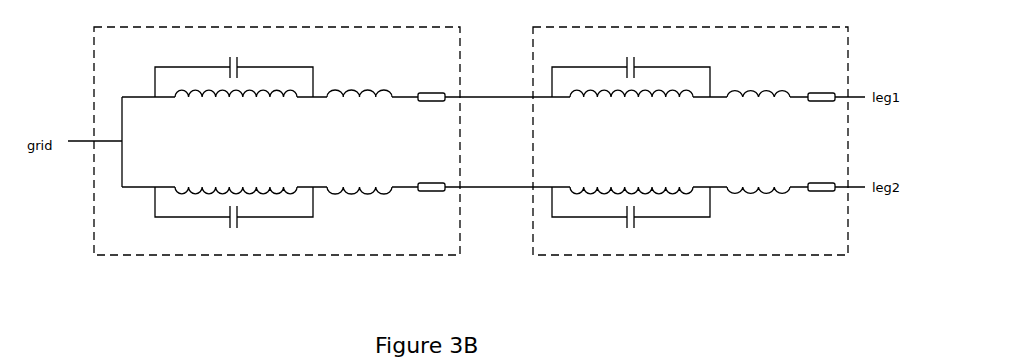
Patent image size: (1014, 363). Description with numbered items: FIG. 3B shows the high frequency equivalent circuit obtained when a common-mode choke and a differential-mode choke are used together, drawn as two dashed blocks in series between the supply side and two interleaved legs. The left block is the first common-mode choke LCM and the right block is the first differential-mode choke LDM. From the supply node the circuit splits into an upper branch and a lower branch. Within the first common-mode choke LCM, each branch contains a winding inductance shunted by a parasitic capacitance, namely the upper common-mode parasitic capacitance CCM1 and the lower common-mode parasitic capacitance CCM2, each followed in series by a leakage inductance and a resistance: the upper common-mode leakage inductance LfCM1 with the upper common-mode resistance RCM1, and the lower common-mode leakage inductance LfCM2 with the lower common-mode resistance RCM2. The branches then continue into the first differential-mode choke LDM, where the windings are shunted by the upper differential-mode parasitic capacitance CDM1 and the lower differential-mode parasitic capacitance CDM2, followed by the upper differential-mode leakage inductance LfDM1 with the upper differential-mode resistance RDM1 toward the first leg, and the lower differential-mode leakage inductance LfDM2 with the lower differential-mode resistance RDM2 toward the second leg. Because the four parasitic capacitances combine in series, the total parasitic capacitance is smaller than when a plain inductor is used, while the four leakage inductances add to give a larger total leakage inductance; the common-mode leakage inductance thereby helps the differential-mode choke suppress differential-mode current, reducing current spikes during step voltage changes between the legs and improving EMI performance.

The first common-mode choke LCM is at (277, 141).
The first differential-mode choke LDM is at (690, 141).
The common-mode choke parasitic capacitance 1 CCM1 is at (234, 66).
The common-mode choke parasitic capacitance 2 CCM2 is at (234, 220).
The common-mode choke leakage inductance 1 LfCM1 is at (359, 84).
The common-mode choke leakage inductance 2 LfCM2 is at (359, 179).
The common-mode choke resistance 1 RCM1 is at (426, 86).
The common-mode choke resistance 2 RCM2 is at (426, 177).
The differential-mode choke parasitic capacitance 1 CDM1 is at (631, 67).
The differential-mode choke parasitic capacitance 2 CDM2 is at (631, 220).
The differential-mode choke leakage inductance 1 LfDM1 is at (758, 84).
The differential-mode choke leakage inductance 2 LfDM2 is at (758, 178).
The differential-mode choke resistance 1 RDM1 is at (817, 86).
The differential-mode choke resistance 2 RDM2 is at (817, 177).